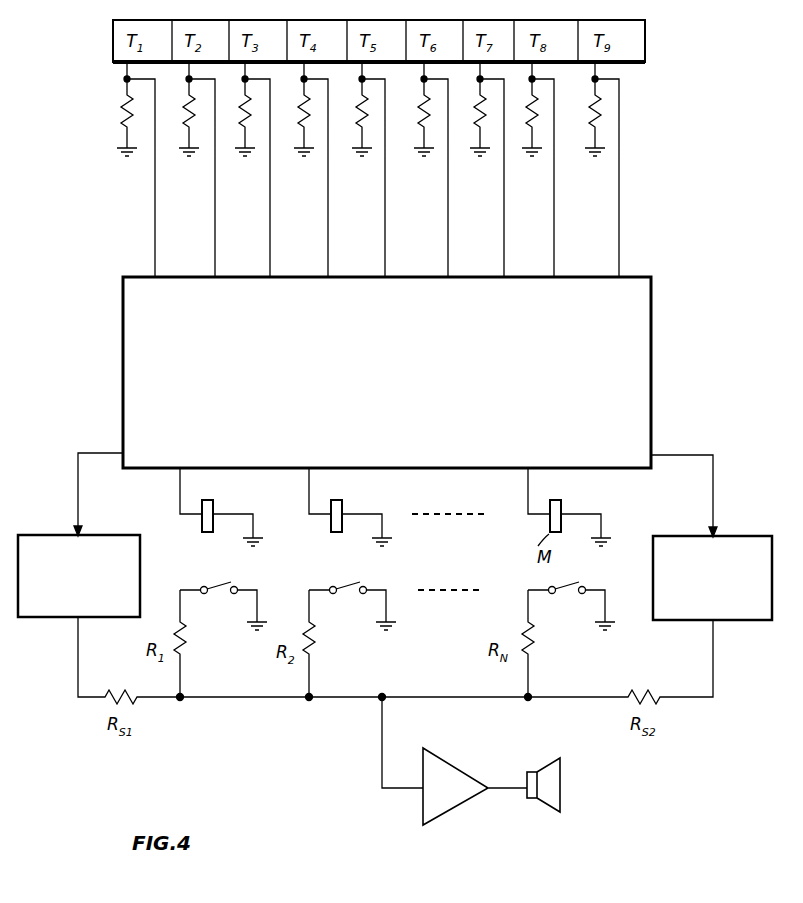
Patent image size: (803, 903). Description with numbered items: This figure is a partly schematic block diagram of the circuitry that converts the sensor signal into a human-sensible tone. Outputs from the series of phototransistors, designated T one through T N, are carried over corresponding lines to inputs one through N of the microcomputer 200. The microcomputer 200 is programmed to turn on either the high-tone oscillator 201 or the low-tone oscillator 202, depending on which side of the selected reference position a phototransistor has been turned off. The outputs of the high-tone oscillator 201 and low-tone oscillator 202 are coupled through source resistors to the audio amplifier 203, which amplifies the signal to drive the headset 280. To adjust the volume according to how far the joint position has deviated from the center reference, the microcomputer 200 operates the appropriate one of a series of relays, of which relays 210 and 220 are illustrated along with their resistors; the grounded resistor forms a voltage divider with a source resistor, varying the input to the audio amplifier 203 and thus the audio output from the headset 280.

The microcomputer 200 is at (124, 292).
The high-tone oscillator 201 is at (92, 536).
The low-tone oscillator 202 is at (684, 544).
The audio amplifier 203 is at (438, 818).
The relay 210 is at (200, 533).
The relay 220 is at (330, 534).
The headset 280 is at (545, 808).